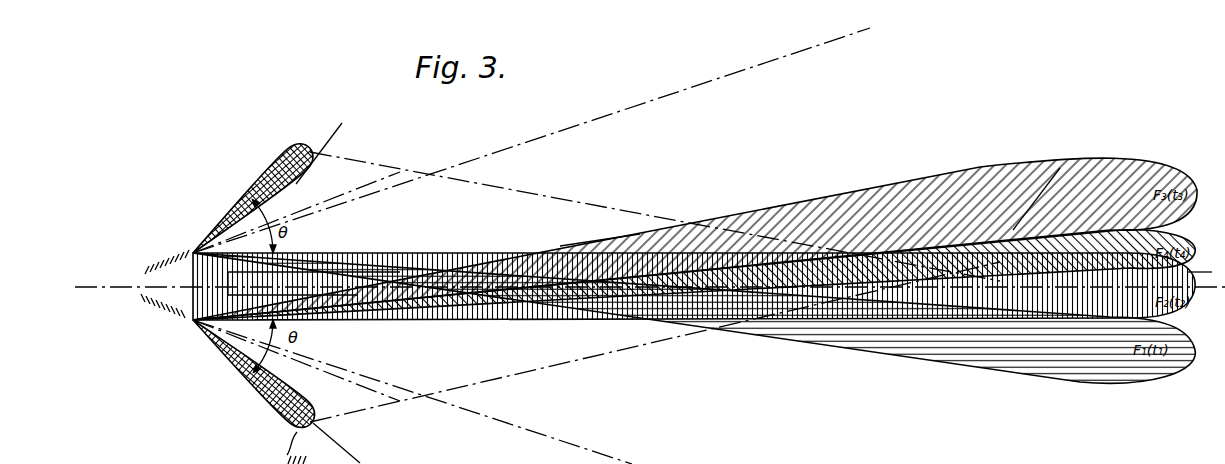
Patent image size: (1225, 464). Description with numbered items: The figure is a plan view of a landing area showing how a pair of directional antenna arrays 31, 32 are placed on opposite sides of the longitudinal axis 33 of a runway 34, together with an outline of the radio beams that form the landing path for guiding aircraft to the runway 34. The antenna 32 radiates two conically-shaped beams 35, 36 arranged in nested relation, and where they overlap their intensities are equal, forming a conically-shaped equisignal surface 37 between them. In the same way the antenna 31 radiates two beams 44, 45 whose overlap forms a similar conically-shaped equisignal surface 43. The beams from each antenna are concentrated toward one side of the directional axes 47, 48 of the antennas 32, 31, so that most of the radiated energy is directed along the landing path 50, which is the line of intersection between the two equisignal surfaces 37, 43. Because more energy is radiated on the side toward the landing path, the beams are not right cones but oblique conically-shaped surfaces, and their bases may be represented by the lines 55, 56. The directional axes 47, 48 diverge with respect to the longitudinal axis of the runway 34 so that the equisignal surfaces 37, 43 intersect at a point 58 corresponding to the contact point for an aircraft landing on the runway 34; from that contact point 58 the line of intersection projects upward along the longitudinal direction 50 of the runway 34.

The directional antenna array 31 is at (170, 314).
The directional antenna array 32 is at (165, 254).
The longitudinal axis of runway 33 is at (133, 286).
The runway 34 is at (228, 292).
The beam 35 is at (1163, 376).
The beam 36 is at (1163, 318).
The equisignal surface 37 is at (325, 137).
The equisignal surface 43 is at (360, 463).
The beam 44 is at (1172, 174).
The beam 45 is at (1190, 258).
The directional axis 47 is at (568, 128).
The directional axis 48 is at (633, 463).
The landing path 50 is at (1060, 168).
The line representing base of equisignal cone 55 is at (613, 208).
The line representing base of equisignal cone 56 is at (590, 358).
The contact point 58 is at (594, 244).